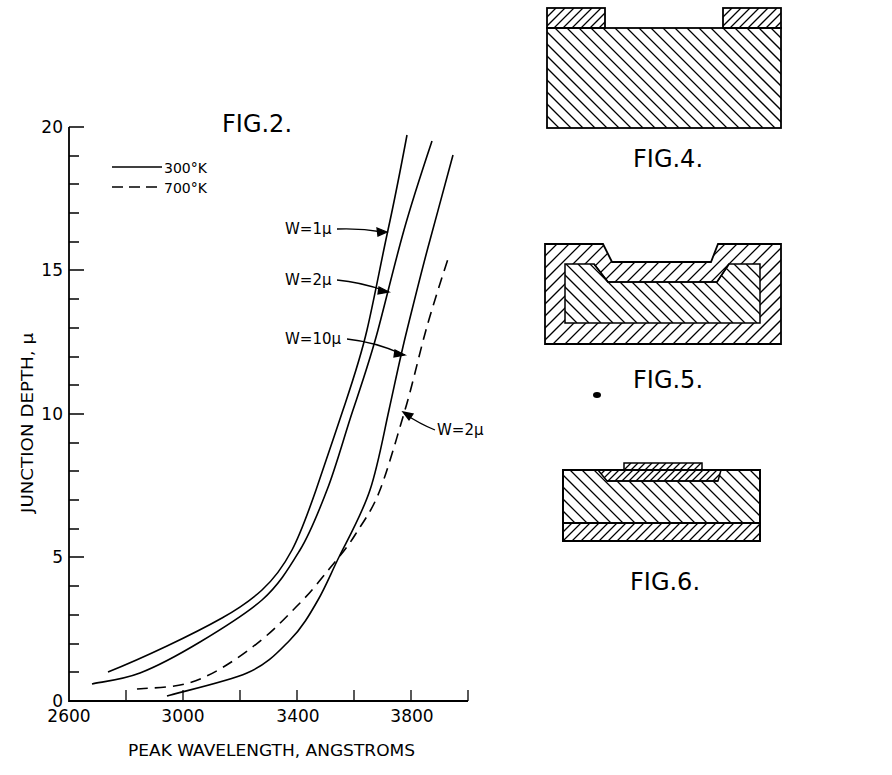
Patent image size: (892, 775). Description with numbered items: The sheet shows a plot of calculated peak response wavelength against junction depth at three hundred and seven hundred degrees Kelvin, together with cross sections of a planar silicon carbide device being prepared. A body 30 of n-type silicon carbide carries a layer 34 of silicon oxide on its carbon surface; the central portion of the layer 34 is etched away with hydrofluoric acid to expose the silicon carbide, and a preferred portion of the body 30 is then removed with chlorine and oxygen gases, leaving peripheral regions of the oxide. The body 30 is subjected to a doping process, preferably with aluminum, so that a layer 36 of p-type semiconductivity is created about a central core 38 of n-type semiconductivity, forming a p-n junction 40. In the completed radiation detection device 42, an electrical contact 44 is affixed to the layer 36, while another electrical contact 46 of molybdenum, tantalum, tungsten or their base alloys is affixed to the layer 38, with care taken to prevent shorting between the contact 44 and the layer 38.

In FIG. 4, the body of silicon carbide 30 is at (773, 87).
In FIG. 4, the layer of silicon oxide 34 is at (548, 21).
In FIG. 5, the layer of p-type semiconductivity 36 is at (774, 253).
In FIG. 6, the layer of p-type semiconductivity 36 is at (722, 470).
In FIG. 5, the central core of n-type semiconductivity 38 is at (753, 315).
In FIG. 6, the central core of n-type semiconductivity 38 is at (761, 507).
In FIG. 5, the p-n junction 40 is at (718, 283).
In FIG. 6, the p-n junction 40 is at (720, 483).
In FIG. 6, the radiation detection device 42 is at (735, 542).
In FIG. 6, the electrical contact 44 is at (692, 463).
In FIG. 6, the electrical contact 46 is at (754, 537).